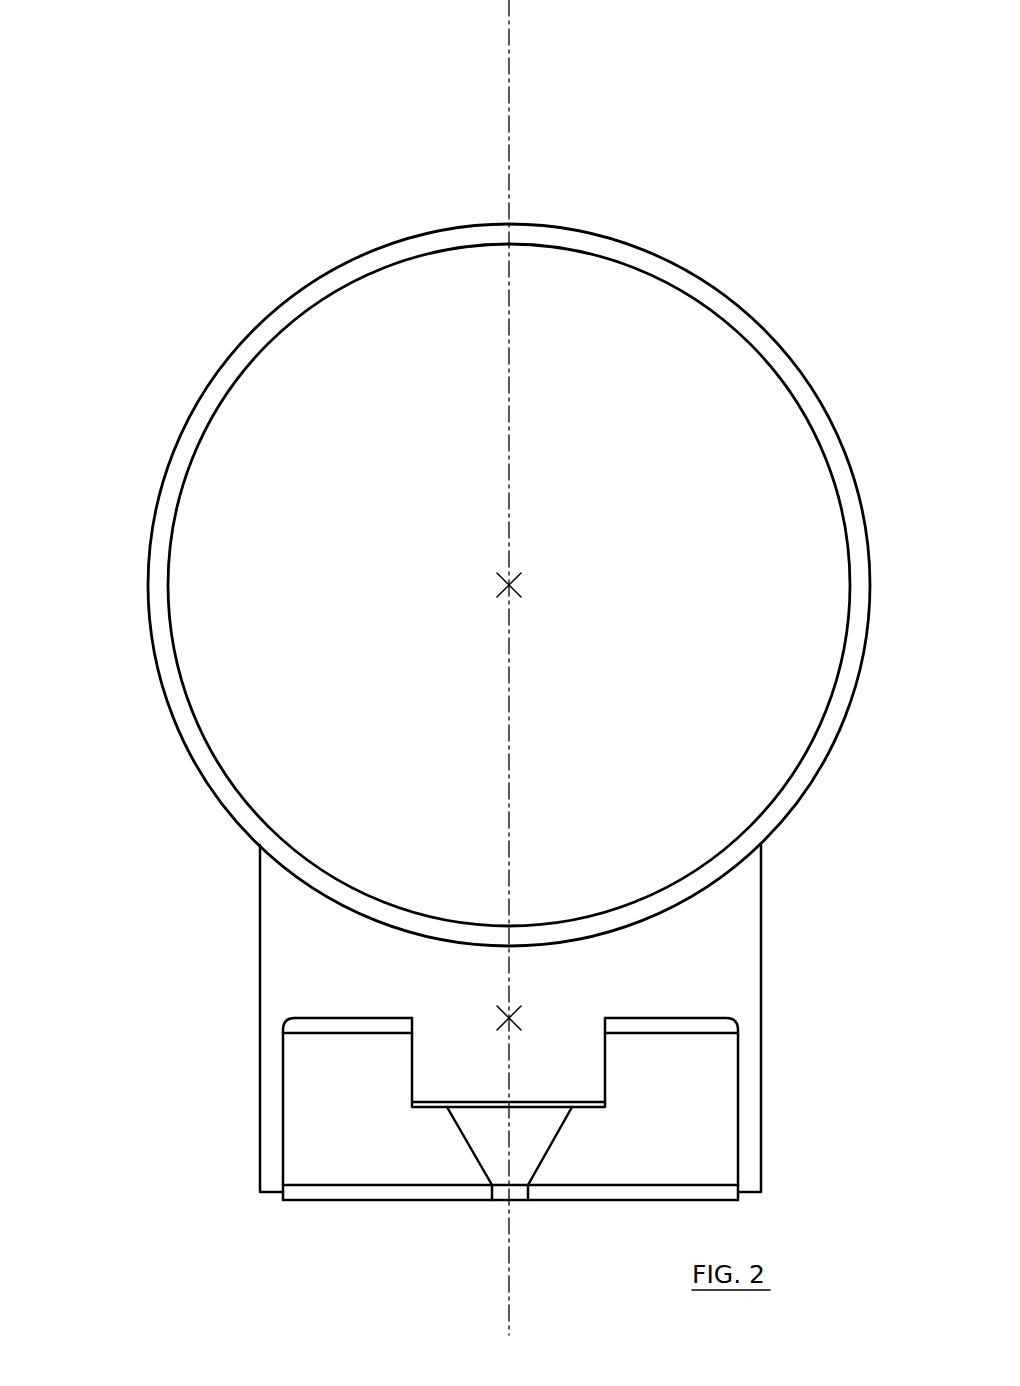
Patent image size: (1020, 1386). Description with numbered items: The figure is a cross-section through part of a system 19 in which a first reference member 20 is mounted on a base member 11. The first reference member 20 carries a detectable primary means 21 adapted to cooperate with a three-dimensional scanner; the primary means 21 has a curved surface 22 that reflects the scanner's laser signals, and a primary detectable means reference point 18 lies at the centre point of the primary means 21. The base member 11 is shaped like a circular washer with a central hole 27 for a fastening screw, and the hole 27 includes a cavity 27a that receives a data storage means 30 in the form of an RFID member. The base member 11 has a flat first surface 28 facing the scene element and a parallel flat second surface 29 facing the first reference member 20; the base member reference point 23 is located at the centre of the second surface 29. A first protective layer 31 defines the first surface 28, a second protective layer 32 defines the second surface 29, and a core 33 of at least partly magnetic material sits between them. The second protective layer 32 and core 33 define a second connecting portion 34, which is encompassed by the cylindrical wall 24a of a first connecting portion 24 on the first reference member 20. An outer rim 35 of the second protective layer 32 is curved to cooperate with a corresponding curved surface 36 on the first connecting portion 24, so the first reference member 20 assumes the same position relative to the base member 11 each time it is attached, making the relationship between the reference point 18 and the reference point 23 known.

The base member 11 is at (464, 999).
The primary detectable means reference point 18 is at (512, 588).
The system 19 is at (464, 952).
The first reference member 20 is at (487, 492).
The primary means 21 is at (254, 312).
The curved surface 22 is at (200, 392).
The base member reference point 23 is at (512, 1020).
The first connecting portion 24 is at (511, 1025).
The cylindrical wall 24a is at (753, 1140).
The central hole 27 is at (440, 1128).
The cavity 27a is at (607, 1062).
The first surface 28 is at (358, 1202).
The second surface 29 is at (368, 1018).
The data storage means 30 is at (478, 1073).
The first protective layer 31 is at (730, 1192).
The second protective layer 32 is at (313, 1028).
The core 33 is at (710, 1090).
The second connecting portion 34 is at (265, 1147).
The outer rim 35 is at (290, 1022).
The curved surface 36 is at (740, 1025).